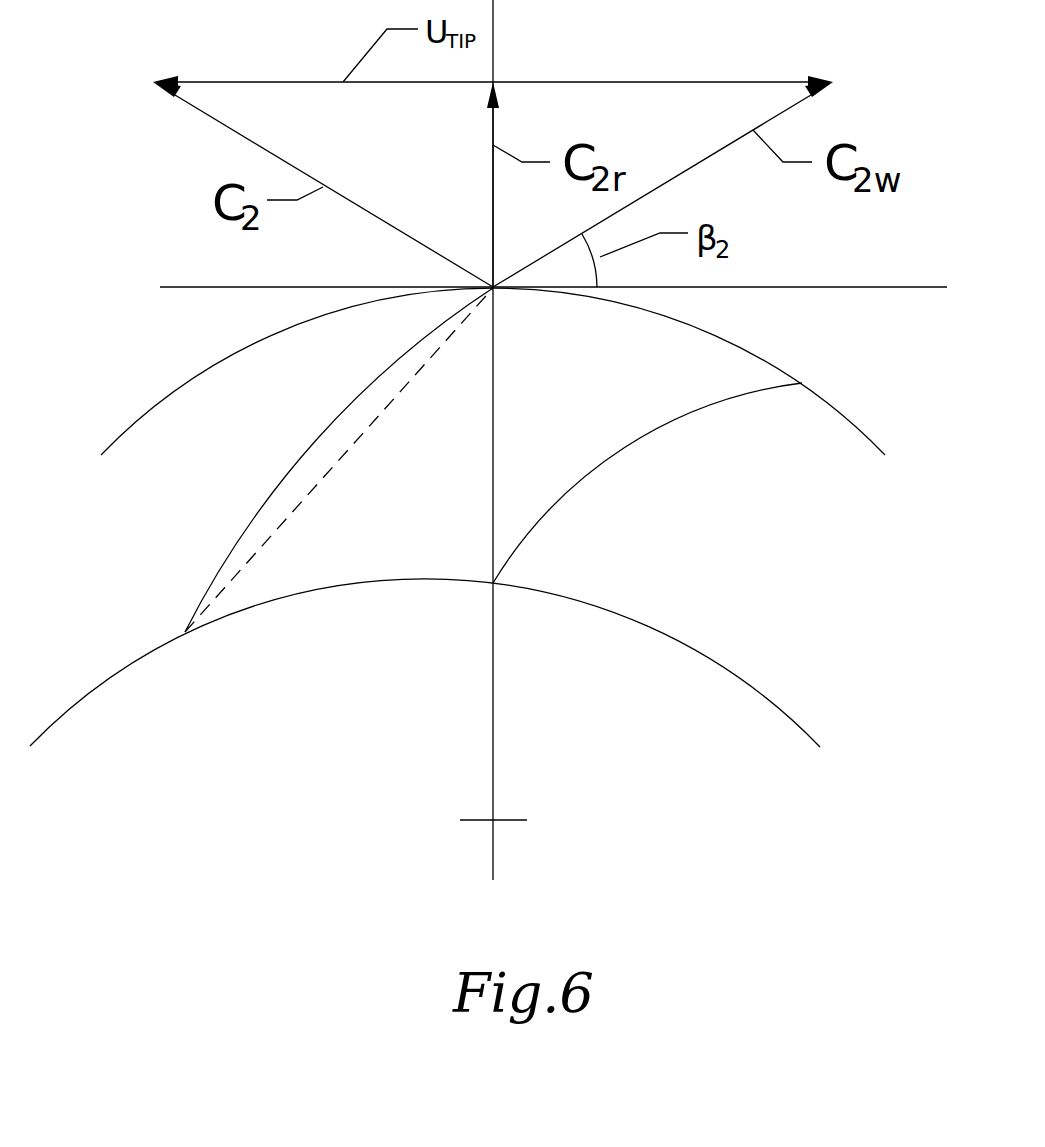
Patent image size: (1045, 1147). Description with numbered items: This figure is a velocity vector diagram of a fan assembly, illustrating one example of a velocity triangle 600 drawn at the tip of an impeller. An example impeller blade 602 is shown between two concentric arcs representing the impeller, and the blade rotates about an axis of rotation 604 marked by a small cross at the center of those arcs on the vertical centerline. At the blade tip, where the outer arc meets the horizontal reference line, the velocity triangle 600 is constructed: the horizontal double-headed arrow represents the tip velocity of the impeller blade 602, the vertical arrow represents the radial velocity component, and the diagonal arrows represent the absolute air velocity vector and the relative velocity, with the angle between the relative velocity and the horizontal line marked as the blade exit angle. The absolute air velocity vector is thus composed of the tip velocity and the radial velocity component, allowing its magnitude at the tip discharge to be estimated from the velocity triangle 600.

The velocity triangle 600 is at (687, 832).
The impeller blade 602 is at (493, 483).
The axis of rotation 604 is at (493, 816).